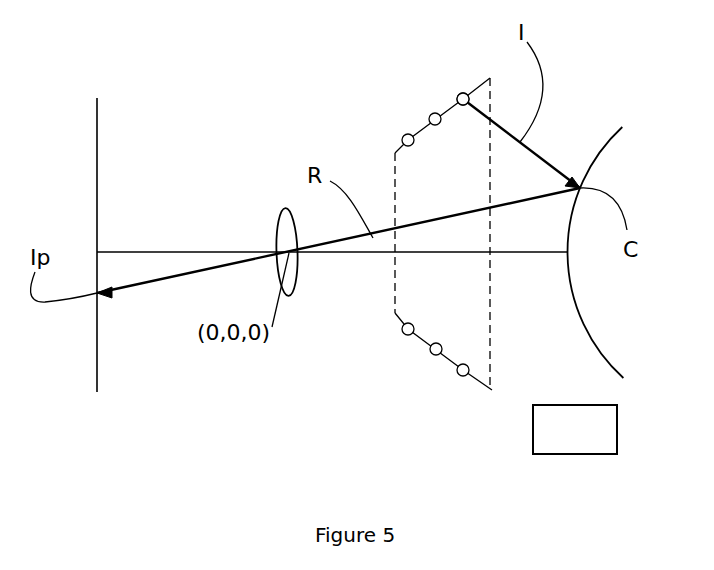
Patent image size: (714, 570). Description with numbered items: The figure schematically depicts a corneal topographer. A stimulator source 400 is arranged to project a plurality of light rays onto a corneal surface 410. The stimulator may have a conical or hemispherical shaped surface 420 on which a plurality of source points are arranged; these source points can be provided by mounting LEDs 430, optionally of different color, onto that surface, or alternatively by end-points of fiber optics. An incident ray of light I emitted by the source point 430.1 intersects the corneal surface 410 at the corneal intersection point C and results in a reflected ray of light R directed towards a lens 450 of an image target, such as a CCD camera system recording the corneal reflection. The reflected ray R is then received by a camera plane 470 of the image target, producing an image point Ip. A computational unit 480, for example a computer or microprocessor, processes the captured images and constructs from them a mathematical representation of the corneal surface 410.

The stimulator source 400 is at (408, 107).
The corneal surface 410 is at (607, 148).
The conical or hemispherical shaped surface 420 is at (489, 78).
The LEDs 430 is at (433, 355).
The source point 430.1 is at (458, 98).
The lens 450 is at (280, 222).
The camera plane 470 is at (97, 370).
The computational unit 480 is at (533, 417).